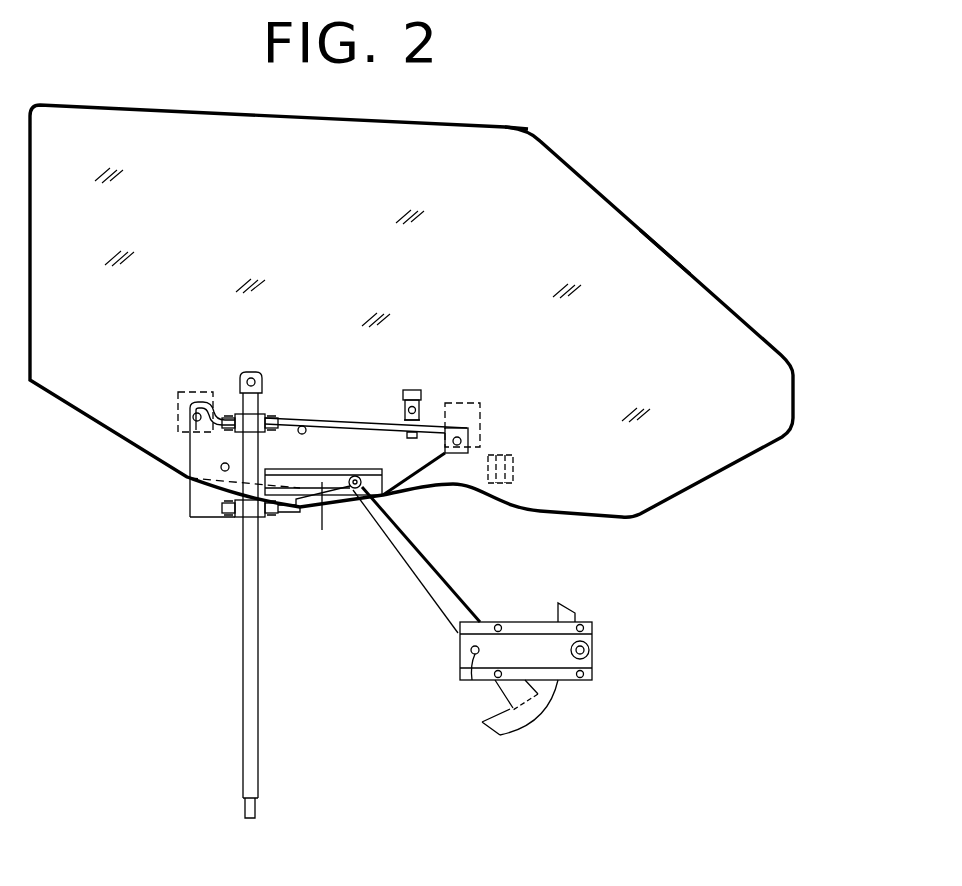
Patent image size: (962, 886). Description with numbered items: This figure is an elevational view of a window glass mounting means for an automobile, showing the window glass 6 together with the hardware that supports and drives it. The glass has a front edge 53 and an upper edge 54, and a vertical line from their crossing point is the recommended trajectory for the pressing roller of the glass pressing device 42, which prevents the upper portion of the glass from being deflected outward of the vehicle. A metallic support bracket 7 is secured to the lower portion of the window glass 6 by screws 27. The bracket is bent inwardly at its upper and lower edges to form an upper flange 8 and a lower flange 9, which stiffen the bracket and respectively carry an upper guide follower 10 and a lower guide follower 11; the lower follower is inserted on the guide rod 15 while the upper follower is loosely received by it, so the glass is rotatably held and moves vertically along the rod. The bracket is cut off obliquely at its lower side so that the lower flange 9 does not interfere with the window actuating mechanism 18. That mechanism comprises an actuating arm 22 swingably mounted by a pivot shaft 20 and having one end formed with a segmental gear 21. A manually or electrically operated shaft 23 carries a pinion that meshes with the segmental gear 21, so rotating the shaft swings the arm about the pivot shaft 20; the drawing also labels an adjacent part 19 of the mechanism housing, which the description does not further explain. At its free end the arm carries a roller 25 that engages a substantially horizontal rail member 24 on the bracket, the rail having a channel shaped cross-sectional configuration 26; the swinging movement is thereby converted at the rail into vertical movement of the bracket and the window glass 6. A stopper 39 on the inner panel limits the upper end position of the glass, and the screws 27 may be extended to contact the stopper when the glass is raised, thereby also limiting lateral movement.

The window glass 6 is at (300, 218).
The support bracket 7 is at (430, 448).
The upper flange 8 is at (370, 418).
The lower flange 9 is at (190, 512).
The upper guide follower 10 is at (258, 413).
The lower guide follower 11 is at (245, 520).
The guide rod 15 is at (248, 722).
The window actuating mechanism 18 is at (511, 614).
The pivot pin 19 is at (592, 655).
The pivot shaft 20 is at (473, 682).
The segmental gear 21 is at (522, 722).
The actuating arm 22 is at (427, 574).
The operated shaft 23 is at (592, 648).
The rail member 24 is at (315, 522).
The roller 25 is at (362, 492).
The channel shaped cross-sectional configuration 26 is at (310, 487).
The screws 27 is at (305, 424).
The stopper 39 is at (195, 392).
The glass pressing device 42 is at (515, 482).
The front edge 53 is at (665, 240).
The upper edge 54 is at (443, 125).